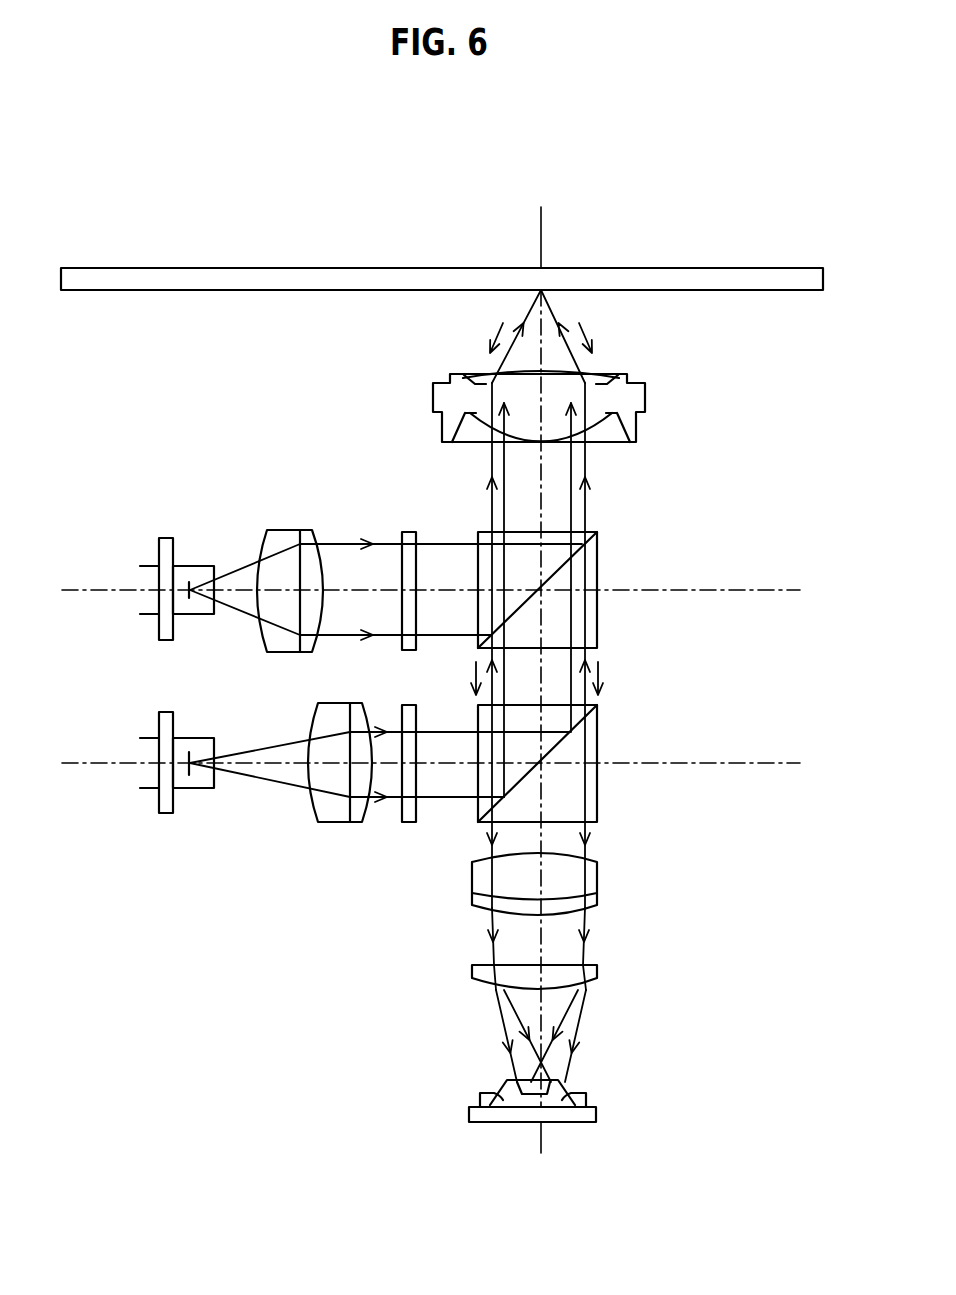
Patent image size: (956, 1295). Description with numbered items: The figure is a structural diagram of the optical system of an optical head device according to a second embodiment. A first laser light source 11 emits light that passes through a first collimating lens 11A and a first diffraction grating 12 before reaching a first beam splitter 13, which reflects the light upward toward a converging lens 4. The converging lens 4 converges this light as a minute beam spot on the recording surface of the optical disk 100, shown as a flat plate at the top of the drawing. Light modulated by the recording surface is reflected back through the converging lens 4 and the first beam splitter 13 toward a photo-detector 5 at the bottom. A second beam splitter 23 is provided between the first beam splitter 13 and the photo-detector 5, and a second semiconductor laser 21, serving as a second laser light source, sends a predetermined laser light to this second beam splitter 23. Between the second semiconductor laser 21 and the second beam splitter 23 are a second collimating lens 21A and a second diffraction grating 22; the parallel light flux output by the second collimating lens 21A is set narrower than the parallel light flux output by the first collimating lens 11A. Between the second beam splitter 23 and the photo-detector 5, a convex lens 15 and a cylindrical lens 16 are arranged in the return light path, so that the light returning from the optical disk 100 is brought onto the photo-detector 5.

The optical disk 100 is at (220, 268).
The converging lens 4 is at (645, 398).
The first laser light source 11 is at (190, 553).
The first collimating lens 11A is at (287, 530).
The first diffraction grating 12 is at (409, 532).
The first beam splitter 13 is at (597, 560).
The second beam splitter 23 is at (597, 742).
The second semiconductor laser 21 is at (190, 790).
The second collimating lens 21A is at (336, 822).
The second diffraction grating 22 is at (408, 822).
The convex lens 15 is at (597, 880).
The cylindrical lens 16 is at (597, 973).
The photo-detector 5 is at (573, 1082).